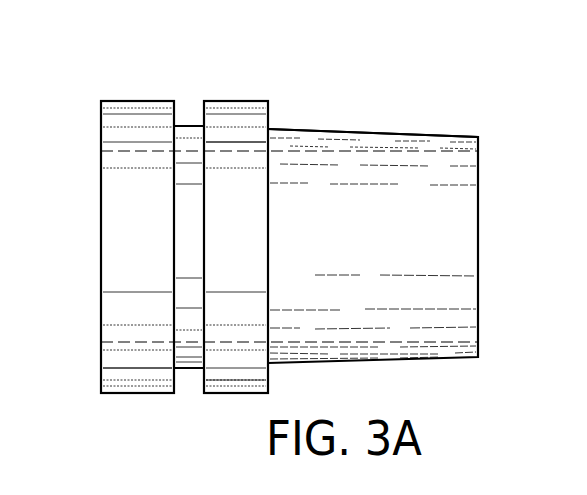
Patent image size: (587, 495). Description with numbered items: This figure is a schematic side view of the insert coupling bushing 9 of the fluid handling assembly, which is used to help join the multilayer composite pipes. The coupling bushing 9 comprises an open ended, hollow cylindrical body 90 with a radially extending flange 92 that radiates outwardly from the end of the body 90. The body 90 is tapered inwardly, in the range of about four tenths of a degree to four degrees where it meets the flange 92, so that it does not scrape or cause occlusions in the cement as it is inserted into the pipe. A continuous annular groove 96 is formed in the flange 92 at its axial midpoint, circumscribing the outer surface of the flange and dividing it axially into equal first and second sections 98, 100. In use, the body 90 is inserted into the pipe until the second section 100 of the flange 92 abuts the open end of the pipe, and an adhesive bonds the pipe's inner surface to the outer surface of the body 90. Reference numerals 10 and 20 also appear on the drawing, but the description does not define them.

The coupling bushing 9 is at (320, 128).
The body 10 is at (235, 138).
The ring 20 is at (219, 100).
The hollow cylindrical body 90 is at (411, 136).
The flange 92 is at (101, 101).
The annular groove 96 is at (191, 125).
The first section 98 is at (110, 358).
The second section 100 is at (226, 374).